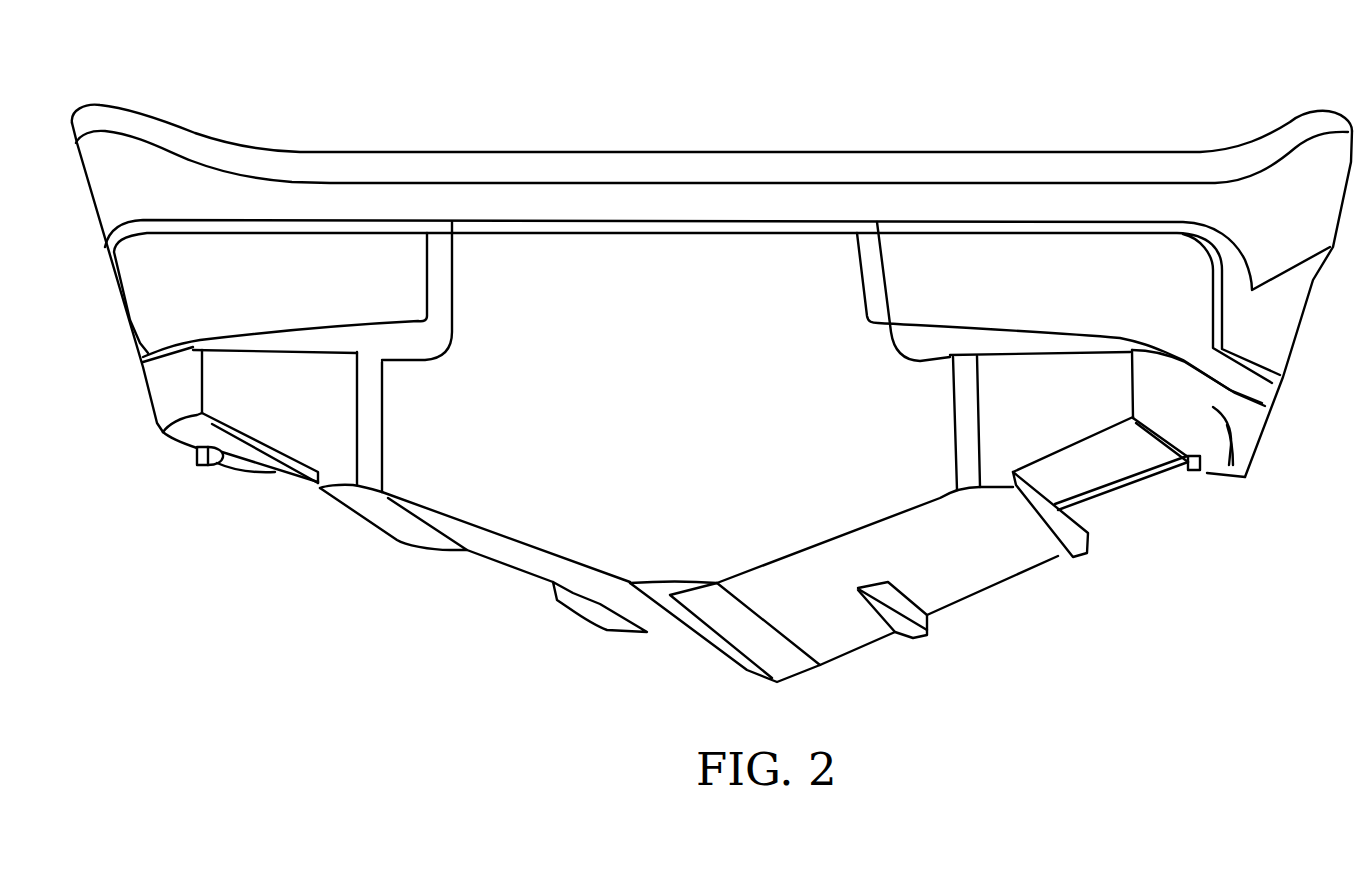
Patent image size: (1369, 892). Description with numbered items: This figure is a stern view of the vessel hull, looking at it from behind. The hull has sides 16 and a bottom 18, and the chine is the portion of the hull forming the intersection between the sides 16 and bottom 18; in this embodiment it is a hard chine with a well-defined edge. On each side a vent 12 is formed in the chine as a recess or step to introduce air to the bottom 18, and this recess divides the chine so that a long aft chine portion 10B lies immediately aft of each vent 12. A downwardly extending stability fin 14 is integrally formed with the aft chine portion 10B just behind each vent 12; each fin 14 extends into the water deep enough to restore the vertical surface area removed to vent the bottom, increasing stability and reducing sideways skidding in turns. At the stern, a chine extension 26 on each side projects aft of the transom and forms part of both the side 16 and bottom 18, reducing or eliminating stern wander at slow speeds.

The aft chine portion 10B is at (168, 435).
The vent 12 is at (1247, 440).
The stability fin 14 is at (202, 465).
The side 16 is at (130, 379).
The bottom 18 is at (490, 575).
The chine extension 26 is at (196, 387).